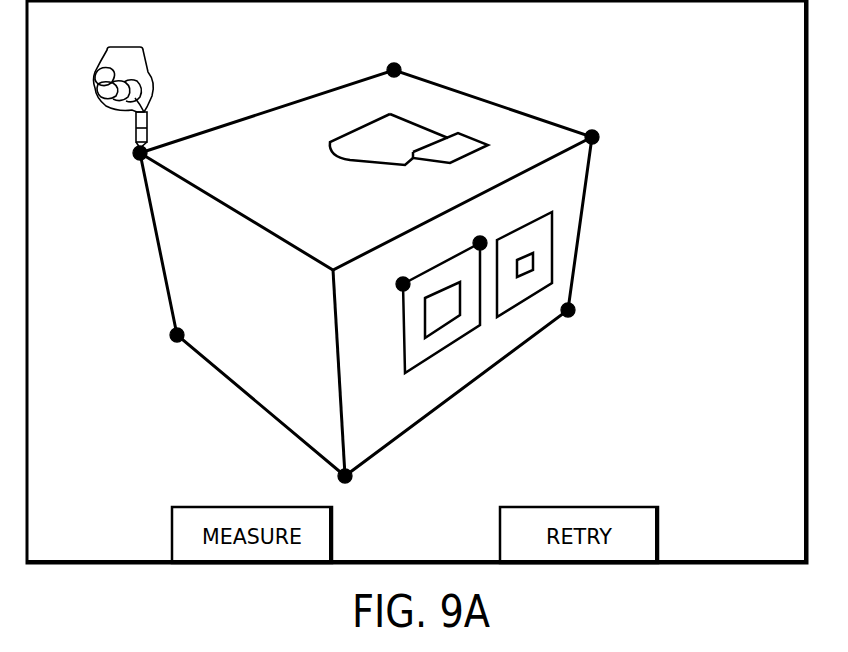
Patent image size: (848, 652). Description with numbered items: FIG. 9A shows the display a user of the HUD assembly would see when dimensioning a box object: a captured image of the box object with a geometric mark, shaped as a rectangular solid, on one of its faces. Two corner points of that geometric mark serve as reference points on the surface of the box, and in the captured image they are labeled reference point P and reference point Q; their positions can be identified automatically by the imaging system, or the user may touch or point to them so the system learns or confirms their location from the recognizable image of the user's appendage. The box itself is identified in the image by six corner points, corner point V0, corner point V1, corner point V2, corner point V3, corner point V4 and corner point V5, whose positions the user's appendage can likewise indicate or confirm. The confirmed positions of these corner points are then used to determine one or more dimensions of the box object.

The corner point v0 V0 is at (599, 138).
The corner point v1 V1 is at (575, 312).
The corner point v2 V2 is at (352, 478).
The corner point v3 V3 is at (170, 335).
The corner point v4 V4 is at (132, 153).
The corner point v5 V5 is at (387, 69).
The reference point P is at (396, 283).
The reference point Q is at (473, 242).